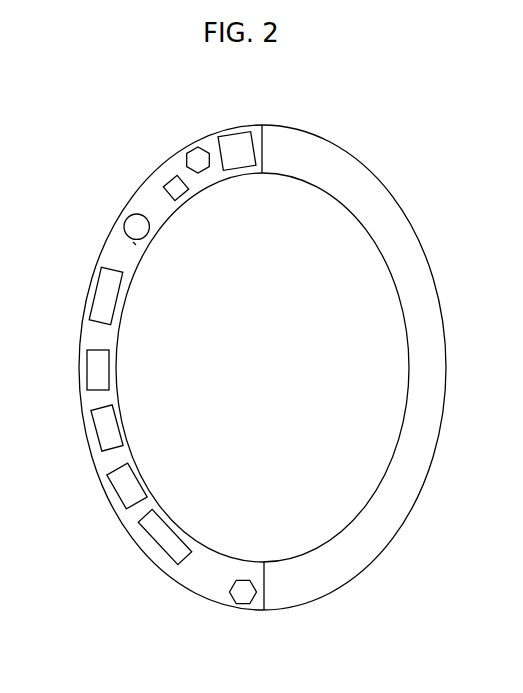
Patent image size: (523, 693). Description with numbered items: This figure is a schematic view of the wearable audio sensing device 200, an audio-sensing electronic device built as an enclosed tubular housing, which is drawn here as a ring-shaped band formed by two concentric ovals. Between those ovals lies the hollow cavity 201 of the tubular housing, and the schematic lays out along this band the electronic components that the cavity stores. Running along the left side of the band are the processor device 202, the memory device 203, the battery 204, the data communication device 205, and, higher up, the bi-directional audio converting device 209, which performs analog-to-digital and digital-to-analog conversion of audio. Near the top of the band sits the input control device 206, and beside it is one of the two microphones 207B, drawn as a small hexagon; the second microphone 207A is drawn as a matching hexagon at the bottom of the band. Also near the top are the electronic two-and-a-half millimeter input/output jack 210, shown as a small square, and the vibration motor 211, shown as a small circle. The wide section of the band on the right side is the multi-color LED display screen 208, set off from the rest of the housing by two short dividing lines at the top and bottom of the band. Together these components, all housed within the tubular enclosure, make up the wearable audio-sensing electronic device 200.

The wearable audio sensing device 200 is at (338, 130).
The hollow cavity 201 is at (193, 572).
The processor device 202 is at (158, 535).
The memory device 203 is at (123, 485).
The battery 204 is at (103, 423).
The data communication device 205 is at (98, 370).
The input control device 206 is at (233, 146).
The microphone 207A is at (243, 595).
The microphone 207B is at (194, 153).
The multi-color LED display screen 208 is at (363, 192).
The bi-directional audio converting device 209 is at (103, 295).
The electronic 2.5 mm input/output jack 210 is at (176, 188).
The vibration motor 211 is at (133, 227).